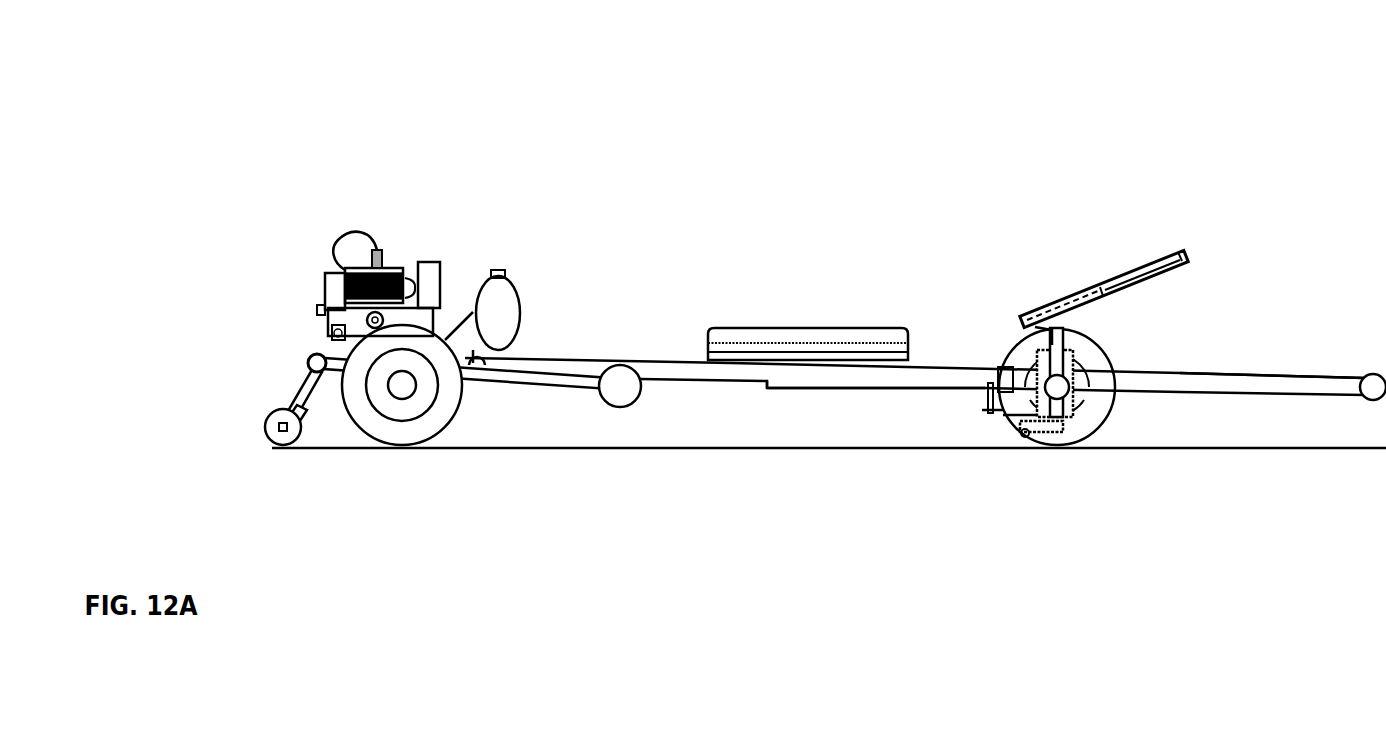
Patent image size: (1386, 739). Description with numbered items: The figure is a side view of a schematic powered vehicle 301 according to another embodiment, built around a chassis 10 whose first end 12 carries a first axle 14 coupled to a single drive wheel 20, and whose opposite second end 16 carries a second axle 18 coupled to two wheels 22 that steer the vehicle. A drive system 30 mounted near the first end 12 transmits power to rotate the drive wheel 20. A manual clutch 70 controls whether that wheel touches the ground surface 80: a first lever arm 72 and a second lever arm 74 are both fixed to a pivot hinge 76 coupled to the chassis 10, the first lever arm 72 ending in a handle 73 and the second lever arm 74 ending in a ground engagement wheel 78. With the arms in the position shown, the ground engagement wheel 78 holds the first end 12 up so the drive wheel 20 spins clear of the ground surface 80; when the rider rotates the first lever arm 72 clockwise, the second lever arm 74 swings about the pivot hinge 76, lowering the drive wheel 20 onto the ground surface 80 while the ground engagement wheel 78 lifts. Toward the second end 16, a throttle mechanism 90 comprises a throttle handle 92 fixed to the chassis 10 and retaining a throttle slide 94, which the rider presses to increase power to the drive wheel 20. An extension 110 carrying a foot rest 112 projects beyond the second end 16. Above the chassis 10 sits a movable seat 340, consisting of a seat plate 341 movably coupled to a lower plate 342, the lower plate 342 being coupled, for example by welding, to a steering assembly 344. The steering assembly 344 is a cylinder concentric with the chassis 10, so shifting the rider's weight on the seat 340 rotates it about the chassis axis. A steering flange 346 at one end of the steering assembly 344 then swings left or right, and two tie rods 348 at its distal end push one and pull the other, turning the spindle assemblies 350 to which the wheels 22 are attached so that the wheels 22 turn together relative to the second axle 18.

The powered vehicle 301 is at (959, 78).
The chassis 10 is at (925, 397).
The first end 12 is at (410, 236).
The first axle 14 is at (403, 400).
The second end 16 is at (1151, 223).
The second axle 18 is at (1080, 410).
The drive wheel 20 is at (424, 439).
The wheels 22 is at (1058, 435).
The drive system 30 is at (343, 233).
The manual clutch 70 is at (260, 415).
The first lever arm 72 is at (555, 378).
The handle 73 is at (636, 402).
The second lever arm 74 is at (293, 400).
The pivot hinge 76 is at (313, 355).
The ground engagement wheel 78 is at (293, 442).
The ground surface 80 is at (1277, 447).
The throttle mechanism 90 is at (1151, 223).
The throttle handle 92 is at (1190, 272).
The throttle slide 94 is at (1188, 248).
The extension 110 is at (1238, 372).
The foot rest 112 is at (1373, 373).
The seat 340 is at (828, 294).
The seat plate 341 is at (890, 335).
The lower plate 342 is at (750, 367).
The steering assembly 344 is at (872, 392).
The steering flange 346 is at (980, 392).
The tie rods 348 is at (1005, 423).
The spindle assemblies 350 is at (1068, 437).